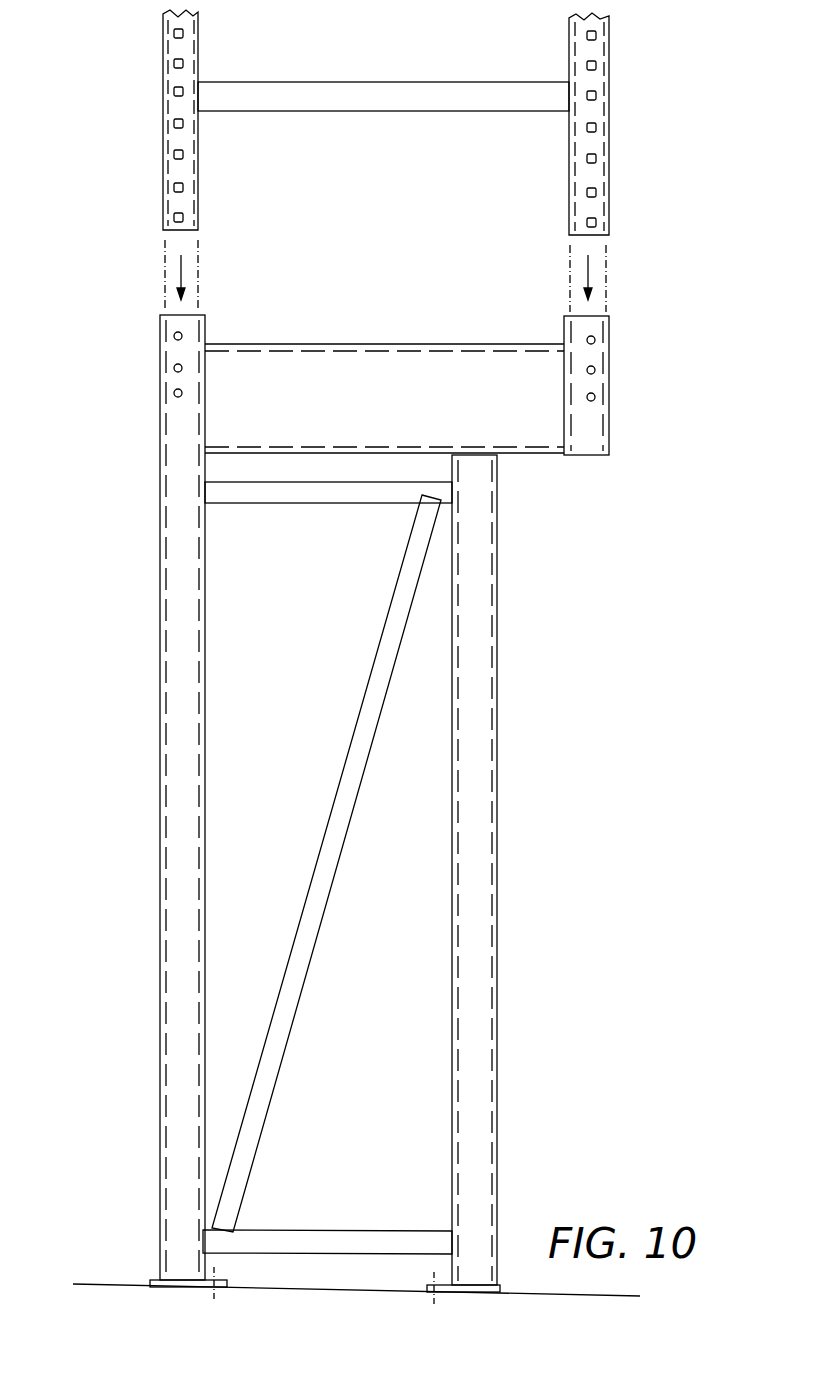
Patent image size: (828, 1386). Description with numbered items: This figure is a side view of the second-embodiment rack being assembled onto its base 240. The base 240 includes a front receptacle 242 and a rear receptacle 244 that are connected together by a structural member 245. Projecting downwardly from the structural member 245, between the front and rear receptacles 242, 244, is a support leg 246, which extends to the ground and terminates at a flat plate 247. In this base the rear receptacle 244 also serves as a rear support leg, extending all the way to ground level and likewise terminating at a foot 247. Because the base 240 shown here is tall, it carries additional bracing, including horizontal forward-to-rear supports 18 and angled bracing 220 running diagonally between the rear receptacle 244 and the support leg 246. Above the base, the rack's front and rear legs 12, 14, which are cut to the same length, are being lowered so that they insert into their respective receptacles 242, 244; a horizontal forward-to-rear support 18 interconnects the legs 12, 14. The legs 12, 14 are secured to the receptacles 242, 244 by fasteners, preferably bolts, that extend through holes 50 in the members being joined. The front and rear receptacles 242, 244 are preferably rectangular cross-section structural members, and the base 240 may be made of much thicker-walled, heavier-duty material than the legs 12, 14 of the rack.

The forward leg 12 is at (609, 60).
The rear leg 14 is at (163, 62).
The horizontal forward-to-rear support 18 is at (344, 82).
The holes 50 is at (176, 154).
The bracing 220 is at (350, 766).
The base 240 is at (585, 580).
The front receptacle 242 is at (610, 420).
The rear receptacle 244 is at (160, 365).
The structural member 245 is at (417, 355).
The support leg 246 is at (497, 663).
The flat plate 247 is at (182, 1280).